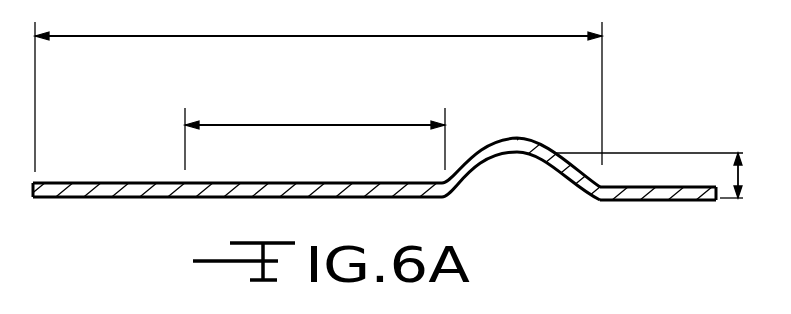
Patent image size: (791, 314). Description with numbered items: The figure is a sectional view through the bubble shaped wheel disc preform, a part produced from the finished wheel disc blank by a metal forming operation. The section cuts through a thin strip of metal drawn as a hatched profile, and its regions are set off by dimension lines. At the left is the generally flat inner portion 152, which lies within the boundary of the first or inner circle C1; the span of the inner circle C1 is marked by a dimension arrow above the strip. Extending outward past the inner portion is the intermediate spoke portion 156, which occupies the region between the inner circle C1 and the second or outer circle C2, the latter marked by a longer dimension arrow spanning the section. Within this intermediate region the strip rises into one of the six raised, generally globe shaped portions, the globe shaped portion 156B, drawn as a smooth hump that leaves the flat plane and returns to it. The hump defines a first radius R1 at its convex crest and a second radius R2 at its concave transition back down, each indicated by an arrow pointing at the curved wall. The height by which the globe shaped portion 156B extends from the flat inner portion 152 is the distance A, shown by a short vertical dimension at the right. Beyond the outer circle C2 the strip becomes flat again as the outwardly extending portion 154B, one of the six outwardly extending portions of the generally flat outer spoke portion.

The inner portion 152 is at (382, 188).
The intermediate spoke portion 156 is at (86, 183).
The globe shaped portion 156B is at (546, 152).
The outwardly extending portion 154B is at (650, 200).
The first or inner circle C1 is at (275, 125).
The second or outer circle C2 is at (283, 38).
The distance A is at (735, 163).
The first radius R1 is at (552, 165).
The second radius R2 is at (588, 197).